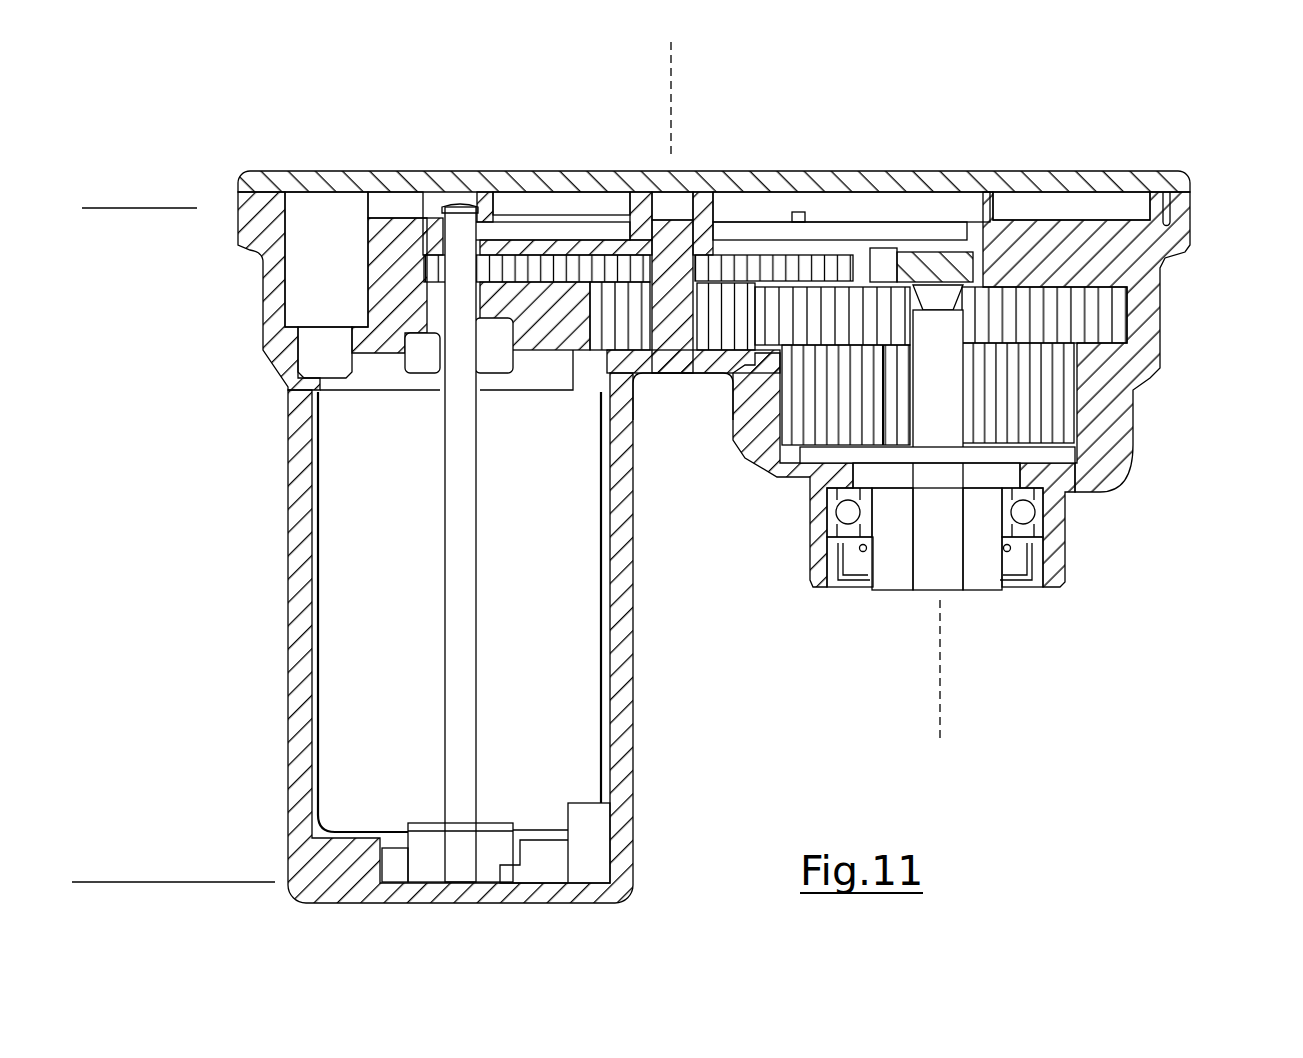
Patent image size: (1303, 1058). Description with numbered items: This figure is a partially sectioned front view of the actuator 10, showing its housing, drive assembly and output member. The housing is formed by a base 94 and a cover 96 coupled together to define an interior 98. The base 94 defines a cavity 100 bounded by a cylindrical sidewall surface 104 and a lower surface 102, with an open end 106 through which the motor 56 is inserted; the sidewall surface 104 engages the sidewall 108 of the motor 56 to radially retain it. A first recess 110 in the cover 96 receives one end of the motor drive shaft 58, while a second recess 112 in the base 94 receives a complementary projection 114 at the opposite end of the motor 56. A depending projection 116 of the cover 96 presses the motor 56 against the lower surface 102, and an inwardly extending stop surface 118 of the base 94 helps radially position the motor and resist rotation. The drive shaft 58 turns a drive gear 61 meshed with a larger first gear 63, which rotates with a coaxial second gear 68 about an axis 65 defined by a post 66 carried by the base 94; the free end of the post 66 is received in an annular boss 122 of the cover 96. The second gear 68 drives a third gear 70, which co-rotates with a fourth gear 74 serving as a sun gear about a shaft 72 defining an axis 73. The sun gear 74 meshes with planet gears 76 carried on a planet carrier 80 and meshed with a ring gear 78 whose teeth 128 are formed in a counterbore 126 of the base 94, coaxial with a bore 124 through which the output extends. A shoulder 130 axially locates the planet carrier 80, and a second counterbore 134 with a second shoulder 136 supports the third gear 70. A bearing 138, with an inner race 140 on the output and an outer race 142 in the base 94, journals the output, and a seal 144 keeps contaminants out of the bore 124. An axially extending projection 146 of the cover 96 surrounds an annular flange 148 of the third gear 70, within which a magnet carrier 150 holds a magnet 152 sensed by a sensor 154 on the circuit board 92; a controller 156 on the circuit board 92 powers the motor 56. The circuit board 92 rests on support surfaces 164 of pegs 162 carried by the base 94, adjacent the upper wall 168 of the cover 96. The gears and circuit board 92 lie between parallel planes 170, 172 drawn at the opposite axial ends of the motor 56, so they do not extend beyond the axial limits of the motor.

The actuator 10 is at (1122, 104).
The motor 56 is at (577, 633).
The drive shaft 58 is at (458, 322).
The drive gear 61 is at (430, 267).
The first gear 63 is at (537, 267).
The axis 65 is at (672, 82).
The post 66 is at (683, 322).
The second gear 68 is at (640, 338).
The third gear 70 is at (1110, 313).
The shaft 72 is at (945, 402).
The axis 73 is at (943, 679).
The fourth gear 74 is at (1063, 428).
The planet gears 76 is at (862, 420).
The ring gear 78 is at (1105, 456).
The planet carrier 80 is at (1083, 493).
The circuit board 92 is at (907, 253).
The base 94 is at (1177, 239).
The cover 96 is at (1120, 178).
The interior 98 is at (1067, 248).
The cavity 100 is at (340, 638).
The lower surface 102 is at (543, 875).
The sidewall surface 104 is at (600, 772).
The open end 106 is at (585, 365).
The sidewall 108 is at (597, 687).
The first recess 110 is at (460, 205).
The second recess 112 is at (398, 853).
The projection 114 is at (517, 842).
The depending projection 116 is at (305, 300).
The stop surface 118 is at (590, 830).
The annular boss 122 is at (703, 215).
The bore 124 is at (853, 590).
The counterbore 126 is at (1065, 406).
The teeth 128 is at (802, 410).
The shoulder 130 is at (787, 462).
The second counterbore 134 is at (1117, 324).
The second shoulder 136 is at (1097, 343).
The bearing 138 is at (1060, 515).
The bearing inner race 140 is at (1005, 528).
The bearing outer race 142 is at (1063, 520).
The seal 144 is at (1012, 592).
The projection 146 is at (990, 272).
The annular flange 148 is at (1000, 222).
The magnet carrier 150 is at (865, 253).
The magnet 152 is at (940, 250).
The sensor 154 is at (897, 253).
The controller 156 is at (613, 222).
The pegs 162 is at (800, 212).
The support surfaces 164 is at (803, 238).
The upper wall 168 is at (522, 220).
The plane 170 is at (107, 208).
The plane 172 is at (132, 882).